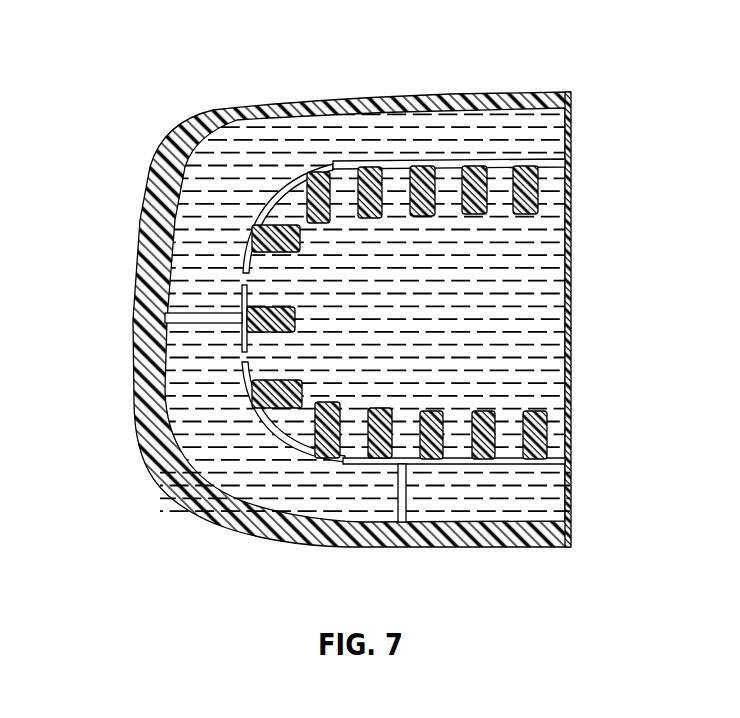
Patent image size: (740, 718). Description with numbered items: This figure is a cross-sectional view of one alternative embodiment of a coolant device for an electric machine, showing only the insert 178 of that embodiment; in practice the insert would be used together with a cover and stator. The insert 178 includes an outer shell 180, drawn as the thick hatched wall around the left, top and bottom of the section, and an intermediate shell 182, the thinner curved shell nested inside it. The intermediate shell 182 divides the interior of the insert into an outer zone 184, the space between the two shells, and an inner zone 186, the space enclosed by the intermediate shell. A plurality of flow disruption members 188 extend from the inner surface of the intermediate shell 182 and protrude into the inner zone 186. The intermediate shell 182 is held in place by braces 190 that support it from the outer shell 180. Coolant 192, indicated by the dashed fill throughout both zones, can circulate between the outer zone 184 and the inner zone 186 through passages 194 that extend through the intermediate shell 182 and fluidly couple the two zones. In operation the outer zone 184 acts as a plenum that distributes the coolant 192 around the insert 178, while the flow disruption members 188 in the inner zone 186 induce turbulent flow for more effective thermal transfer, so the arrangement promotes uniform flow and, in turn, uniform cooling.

The insert 178 is at (311, 353).
The outer shell 180 is at (133, 323).
The intermediate shell 182 is at (240, 206).
The outer zone 184 is at (245, 148).
The inner zone 186 is at (556, 320).
The flow disruption members 188 is at (422, 190).
The braces 190 is at (207, 322).
The coolant 192 is at (282, 490).
The passages 194 is at (457, 464).